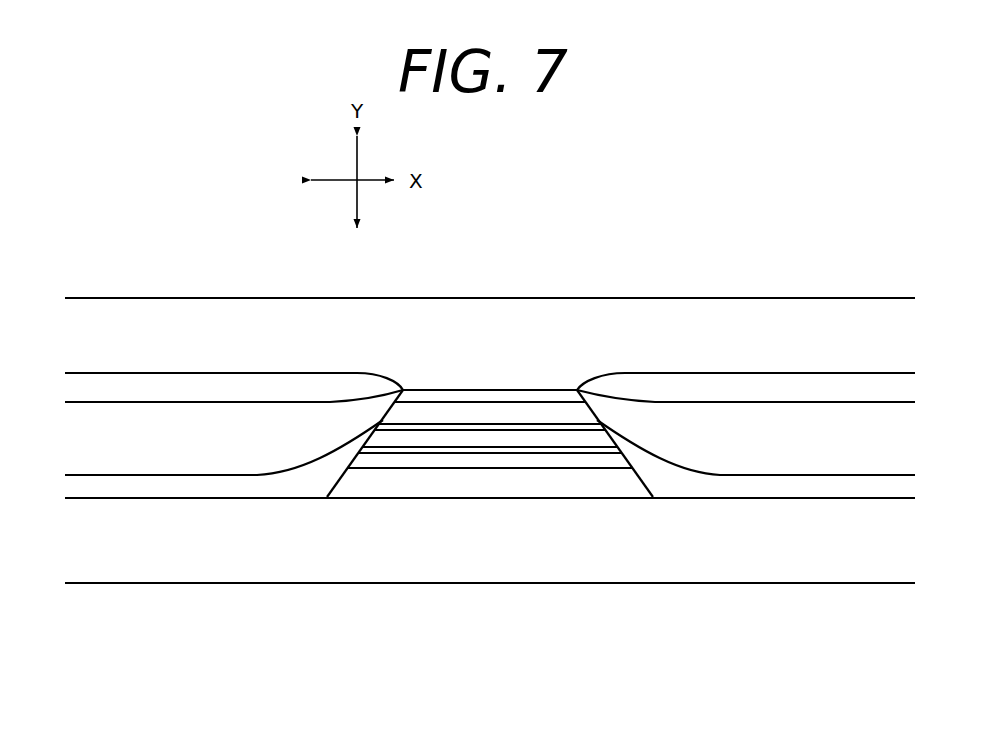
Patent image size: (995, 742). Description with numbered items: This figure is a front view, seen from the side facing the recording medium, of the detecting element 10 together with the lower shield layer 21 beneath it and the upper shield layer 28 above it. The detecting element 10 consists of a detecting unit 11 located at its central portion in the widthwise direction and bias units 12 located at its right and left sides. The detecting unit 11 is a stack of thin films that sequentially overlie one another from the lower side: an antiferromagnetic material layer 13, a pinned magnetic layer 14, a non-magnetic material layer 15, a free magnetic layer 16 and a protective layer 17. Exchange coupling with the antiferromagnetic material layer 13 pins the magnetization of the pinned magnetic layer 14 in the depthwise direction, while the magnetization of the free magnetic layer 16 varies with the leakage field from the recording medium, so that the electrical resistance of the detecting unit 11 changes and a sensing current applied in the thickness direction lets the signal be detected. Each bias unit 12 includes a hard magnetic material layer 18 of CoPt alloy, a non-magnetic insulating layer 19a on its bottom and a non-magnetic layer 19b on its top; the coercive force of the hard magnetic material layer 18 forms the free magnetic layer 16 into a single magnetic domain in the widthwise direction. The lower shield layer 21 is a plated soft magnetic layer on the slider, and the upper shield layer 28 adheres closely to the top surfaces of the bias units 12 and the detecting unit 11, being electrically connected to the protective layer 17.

The detecting element 10 is at (403, 503).
The detecting unit 11 is at (545, 503).
The bias unit 12 is at (200, 503).
The antiferromagnetic material layer 13 is at (450, 485).
The pinned magnetic layer 14 is at (635, 470).
The non-magnetic material layer 15 is at (521, 427).
The free magnetic layer 16 is at (432, 415).
The protective layer 17 is at (462, 397).
The hard magnetic material layer 18 is at (145, 425).
The non-magnetic insulating layer 19a is at (110, 485).
The non-magnetic layer 19b is at (242, 390).
The lower shield layer 21 is at (275, 565).
The upper shield layer 28 is at (580, 355).